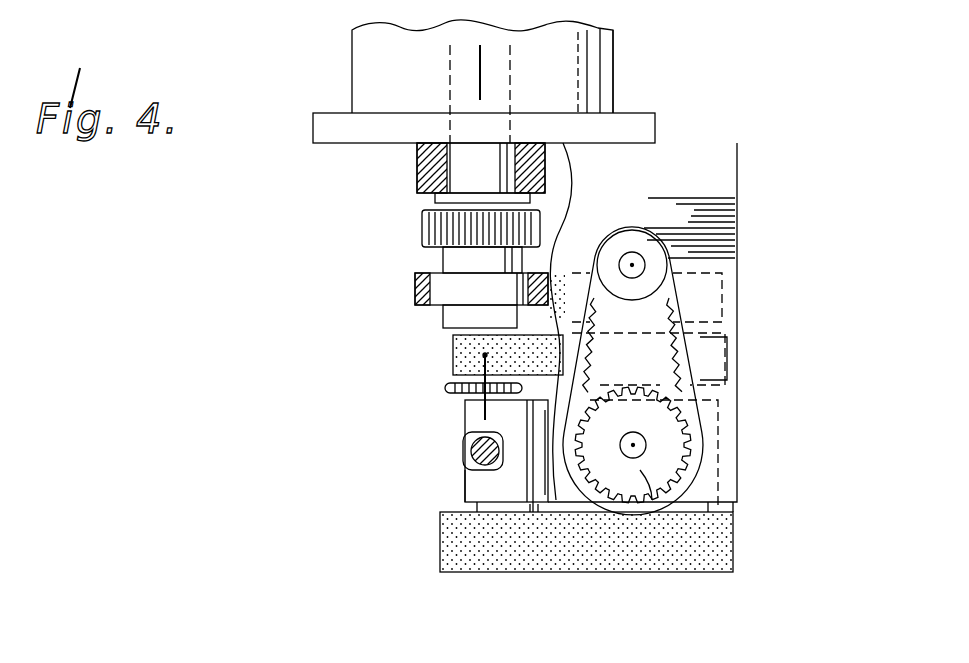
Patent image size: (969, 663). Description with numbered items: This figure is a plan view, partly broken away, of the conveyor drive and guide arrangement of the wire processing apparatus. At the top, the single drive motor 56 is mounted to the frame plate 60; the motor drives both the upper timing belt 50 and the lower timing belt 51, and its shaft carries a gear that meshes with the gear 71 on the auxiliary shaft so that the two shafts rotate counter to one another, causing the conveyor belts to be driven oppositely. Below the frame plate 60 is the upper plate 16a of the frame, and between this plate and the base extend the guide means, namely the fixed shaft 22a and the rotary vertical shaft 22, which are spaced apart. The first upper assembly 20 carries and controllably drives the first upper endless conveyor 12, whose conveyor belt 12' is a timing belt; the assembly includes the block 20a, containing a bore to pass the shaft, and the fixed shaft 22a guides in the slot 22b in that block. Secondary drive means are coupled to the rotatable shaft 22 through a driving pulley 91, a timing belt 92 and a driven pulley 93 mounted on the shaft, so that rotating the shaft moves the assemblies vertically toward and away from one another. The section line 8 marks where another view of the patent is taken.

The motor housing 56 is at (613, 55).
The mounting plate 60 is at (655, 122).
The housing side wall 16a is at (718, 165).
The section line 8- 8 is at (477, 55).
The drive gear assembly 71 is at (422, 230).
The partition wall 51 is at (556, 253).
The support block 50 is at (453, 352).
The drive pulley 91 is at (652, 262).
The timing belt 92 is at (686, 360).
The driven gear 22 is at (648, 441).
The gear shaft 93 is at (641, 472).
The lower housing block 20 is at (520, 500).
The housing block corner 20a is at (477, 490).
The bearing housing 22a is at (462, 446).
The bearing 22b is at (466, 462).
The base 12 is at (531, 556).
The base surface 12' is at (550, 574).